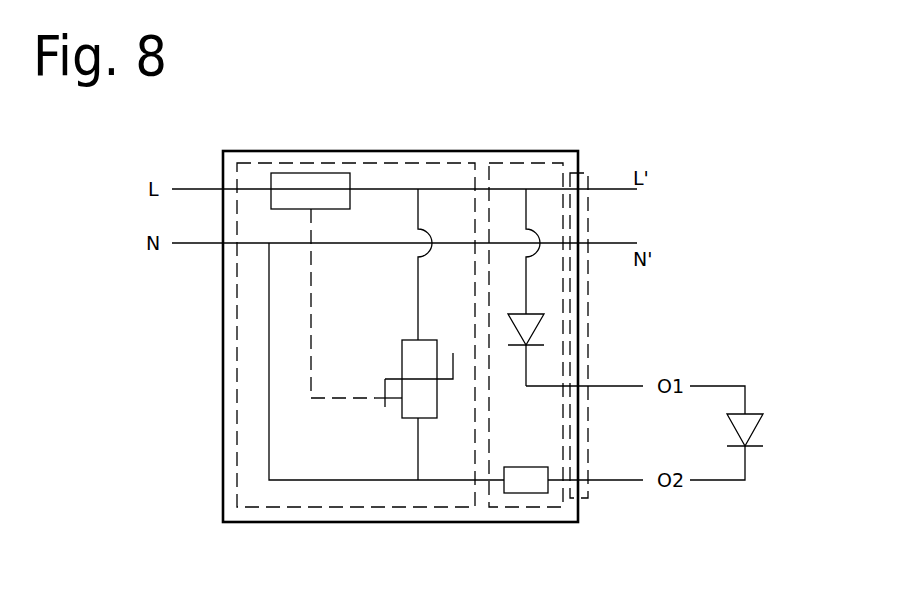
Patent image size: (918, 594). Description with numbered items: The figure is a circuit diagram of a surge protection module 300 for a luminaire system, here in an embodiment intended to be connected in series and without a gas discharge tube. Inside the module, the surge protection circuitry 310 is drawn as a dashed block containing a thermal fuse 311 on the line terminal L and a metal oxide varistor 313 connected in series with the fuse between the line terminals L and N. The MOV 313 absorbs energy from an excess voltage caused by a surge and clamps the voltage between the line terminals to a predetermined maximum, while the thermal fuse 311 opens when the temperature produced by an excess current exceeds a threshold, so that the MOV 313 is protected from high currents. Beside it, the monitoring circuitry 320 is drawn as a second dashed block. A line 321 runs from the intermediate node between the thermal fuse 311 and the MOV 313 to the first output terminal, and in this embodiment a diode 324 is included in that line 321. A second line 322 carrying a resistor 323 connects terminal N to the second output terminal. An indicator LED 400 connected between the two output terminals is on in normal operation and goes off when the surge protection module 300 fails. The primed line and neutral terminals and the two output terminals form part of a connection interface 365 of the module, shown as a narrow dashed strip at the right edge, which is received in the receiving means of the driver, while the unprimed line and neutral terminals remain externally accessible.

The surge protection module 300 is at (390, 151).
The surge protection circuitry 310 is at (296, 507).
The thermal fuse 311 is at (287, 186).
The metal oxide varistor (MOV) 313 is at (410, 367).
The monitoring circuitry 320 is at (525, 162).
The line 321 is at (545, 228).
The line 322 is at (482, 485).
The resistor 323 is at (519, 493).
The diode 324 is at (545, 332).
The connection interface 365 is at (588, 489).
The indicator LED 400 is at (747, 428).